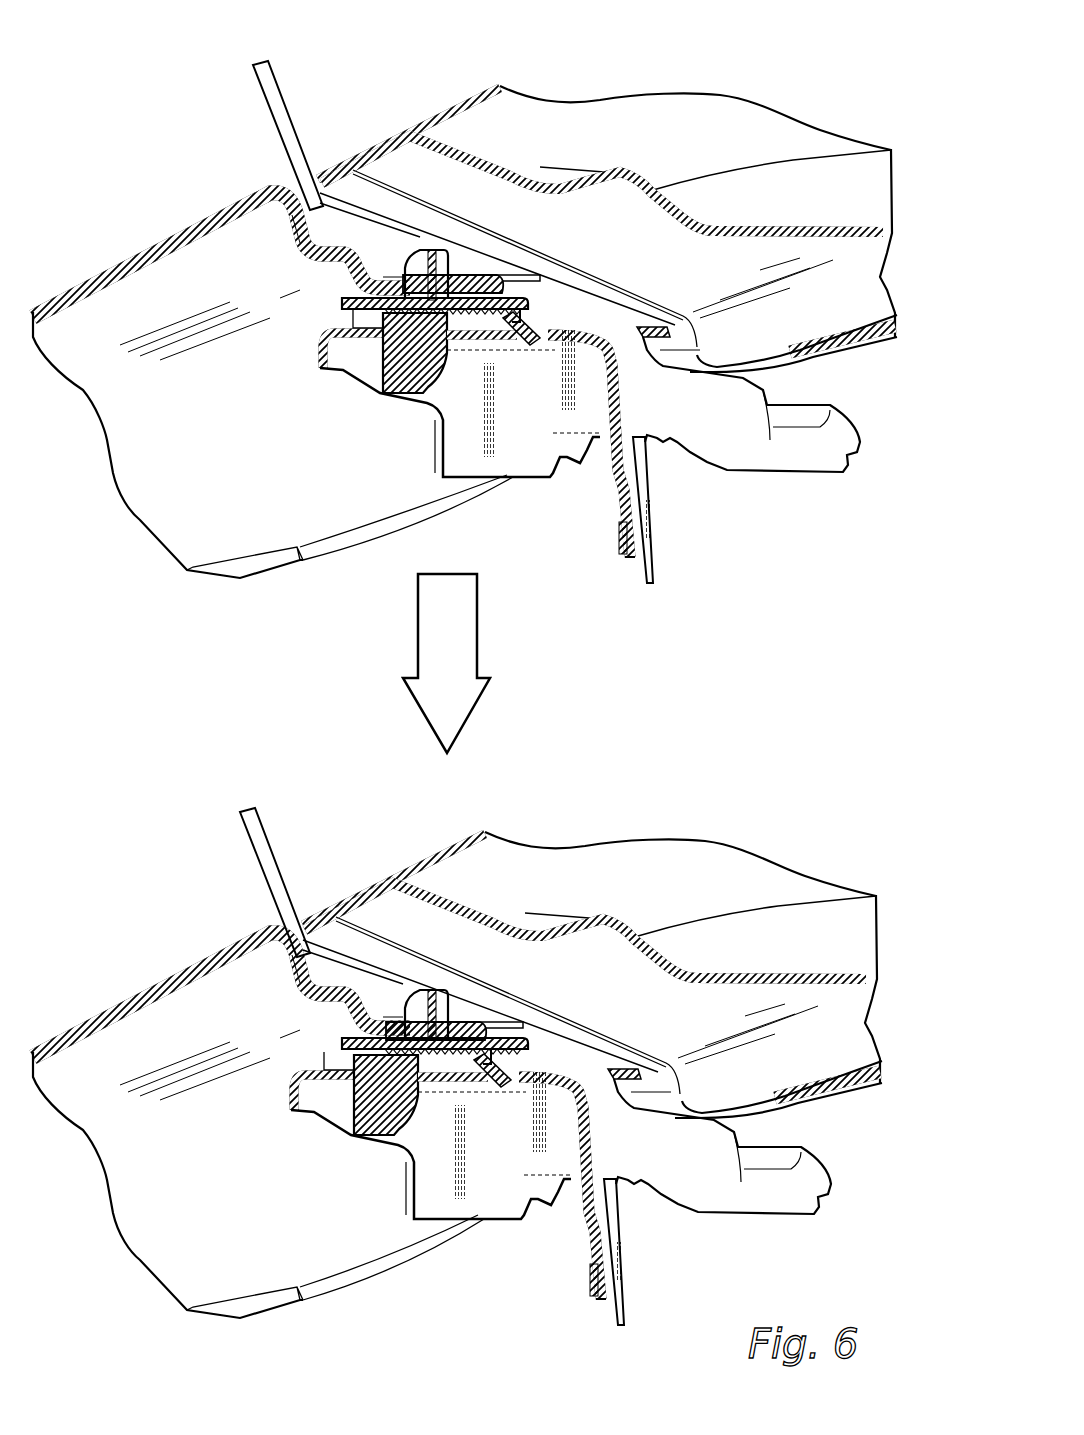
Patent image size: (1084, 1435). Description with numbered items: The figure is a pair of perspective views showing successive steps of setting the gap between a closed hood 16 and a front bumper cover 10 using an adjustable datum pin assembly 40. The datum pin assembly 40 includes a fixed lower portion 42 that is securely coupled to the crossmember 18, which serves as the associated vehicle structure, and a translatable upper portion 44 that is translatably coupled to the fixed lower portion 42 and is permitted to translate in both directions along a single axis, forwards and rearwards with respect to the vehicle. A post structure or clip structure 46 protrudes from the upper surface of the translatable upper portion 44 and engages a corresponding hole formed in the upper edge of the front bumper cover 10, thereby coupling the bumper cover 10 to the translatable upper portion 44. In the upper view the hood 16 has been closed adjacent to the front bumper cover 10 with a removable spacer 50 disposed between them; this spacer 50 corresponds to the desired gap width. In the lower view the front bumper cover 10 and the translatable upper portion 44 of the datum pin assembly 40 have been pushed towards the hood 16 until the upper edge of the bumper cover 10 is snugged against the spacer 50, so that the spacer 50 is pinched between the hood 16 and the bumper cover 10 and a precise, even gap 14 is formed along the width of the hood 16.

The front bumper cover 10 is at (152, 240).
The gap 14 is at (318, 226).
The hood 16 is at (648, 97).
The crossmember 18 is at (727, 472).
The adjustable datum pin assembly 40 is at (482, 248).
The fixed lower portion 42 is at (362, 353).
The translatable upper portion 44 is at (383, 277).
The post structure or clip structure 46 is at (427, 250).
The removable spacer 50 is at (263, 58).